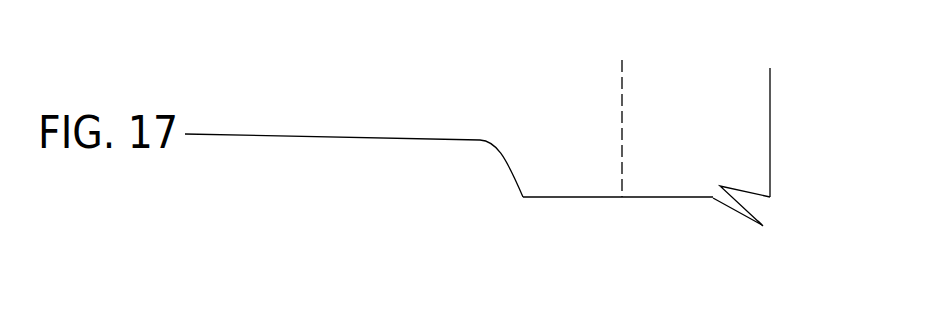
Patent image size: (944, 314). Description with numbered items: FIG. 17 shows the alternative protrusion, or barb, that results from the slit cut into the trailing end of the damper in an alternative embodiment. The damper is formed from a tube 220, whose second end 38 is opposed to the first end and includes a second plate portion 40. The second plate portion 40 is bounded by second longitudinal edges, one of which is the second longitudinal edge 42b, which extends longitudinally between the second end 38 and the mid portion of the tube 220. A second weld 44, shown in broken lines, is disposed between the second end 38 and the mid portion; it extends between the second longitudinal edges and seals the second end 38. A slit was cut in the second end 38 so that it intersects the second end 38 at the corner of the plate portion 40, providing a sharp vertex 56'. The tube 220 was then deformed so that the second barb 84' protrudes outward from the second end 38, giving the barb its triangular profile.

The tube 220 is at (440, 88).
The second longitudinal edge 42b is at (595, 200).
The second weld 44 is at (620, 133).
The second plate portion 40 is at (735, 98).
The second end 38 is at (772, 133).
The second barb 84' is at (732, 225).
The sharp vertex 56' is at (781, 244).